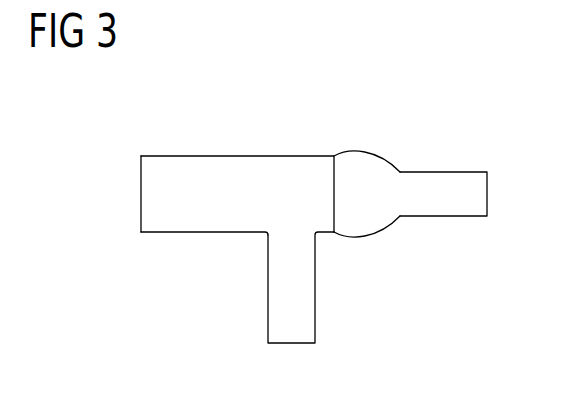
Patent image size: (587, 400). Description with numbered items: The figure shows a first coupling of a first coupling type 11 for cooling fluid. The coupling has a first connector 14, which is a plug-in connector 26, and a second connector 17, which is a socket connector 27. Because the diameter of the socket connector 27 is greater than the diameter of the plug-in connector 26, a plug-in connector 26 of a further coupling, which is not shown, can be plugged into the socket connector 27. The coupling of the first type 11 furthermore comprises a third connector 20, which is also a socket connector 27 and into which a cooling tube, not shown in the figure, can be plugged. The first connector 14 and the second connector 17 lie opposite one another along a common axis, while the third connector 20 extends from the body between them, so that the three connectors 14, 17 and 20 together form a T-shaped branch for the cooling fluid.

The first coupling type 11 is at (321, 112).
The first connector 14 is at (487, 192).
The second connector 17 is at (141, 192).
The third connector 20 is at (315, 278).
The plug-in connector 26 is at (486, 140).
The socket connector 27 is at (267, 144).